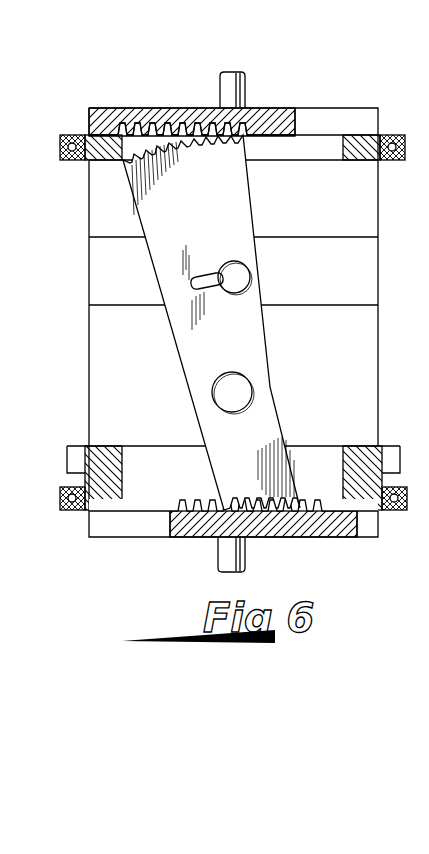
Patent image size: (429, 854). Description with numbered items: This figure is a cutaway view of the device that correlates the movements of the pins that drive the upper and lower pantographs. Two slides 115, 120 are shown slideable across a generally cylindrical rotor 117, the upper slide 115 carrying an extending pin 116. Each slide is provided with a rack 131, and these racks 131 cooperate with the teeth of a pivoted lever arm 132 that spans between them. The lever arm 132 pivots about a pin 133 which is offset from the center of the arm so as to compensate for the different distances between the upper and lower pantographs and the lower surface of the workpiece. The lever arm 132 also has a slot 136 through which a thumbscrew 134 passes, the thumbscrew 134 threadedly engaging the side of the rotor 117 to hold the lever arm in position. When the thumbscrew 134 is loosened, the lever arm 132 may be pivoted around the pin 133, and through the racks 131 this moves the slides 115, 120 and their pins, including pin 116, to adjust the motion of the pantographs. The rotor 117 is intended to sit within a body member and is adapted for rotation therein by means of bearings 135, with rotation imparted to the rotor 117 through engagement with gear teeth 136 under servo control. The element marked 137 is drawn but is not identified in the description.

The slide 115 is at (166, 108).
The pin 116 is at (253, 57).
The rotor 117 is at (222, 566).
The slide 120 is at (313, 538).
The racks 131 is at (245, 130).
The lever arm 132 is at (248, 203).
The pin 133 is at (247, 382).
The thumbscrew 134 is at (242, 268).
The bearings 135 is at (60, 160).
The slot 136 is at (67, 447).
The pin 137 is at (192, 283).